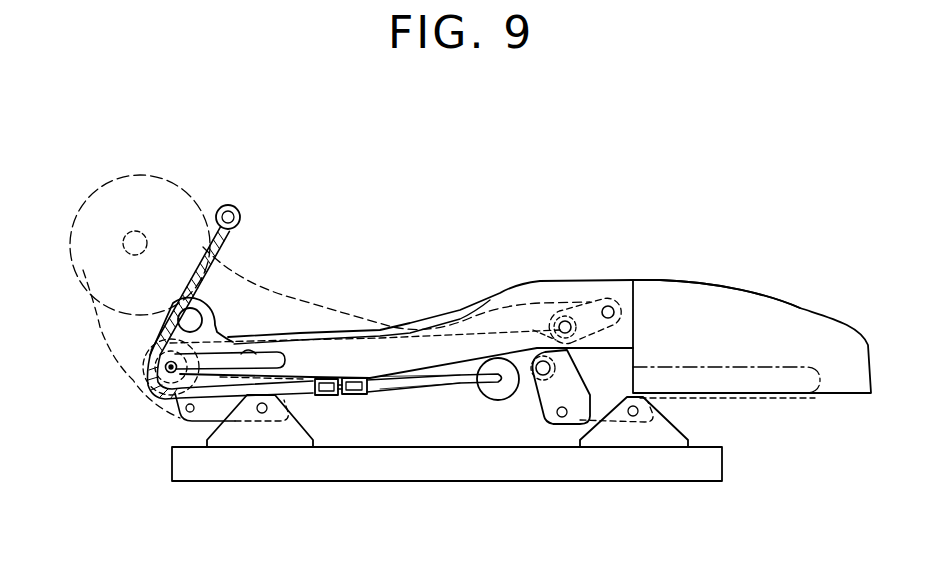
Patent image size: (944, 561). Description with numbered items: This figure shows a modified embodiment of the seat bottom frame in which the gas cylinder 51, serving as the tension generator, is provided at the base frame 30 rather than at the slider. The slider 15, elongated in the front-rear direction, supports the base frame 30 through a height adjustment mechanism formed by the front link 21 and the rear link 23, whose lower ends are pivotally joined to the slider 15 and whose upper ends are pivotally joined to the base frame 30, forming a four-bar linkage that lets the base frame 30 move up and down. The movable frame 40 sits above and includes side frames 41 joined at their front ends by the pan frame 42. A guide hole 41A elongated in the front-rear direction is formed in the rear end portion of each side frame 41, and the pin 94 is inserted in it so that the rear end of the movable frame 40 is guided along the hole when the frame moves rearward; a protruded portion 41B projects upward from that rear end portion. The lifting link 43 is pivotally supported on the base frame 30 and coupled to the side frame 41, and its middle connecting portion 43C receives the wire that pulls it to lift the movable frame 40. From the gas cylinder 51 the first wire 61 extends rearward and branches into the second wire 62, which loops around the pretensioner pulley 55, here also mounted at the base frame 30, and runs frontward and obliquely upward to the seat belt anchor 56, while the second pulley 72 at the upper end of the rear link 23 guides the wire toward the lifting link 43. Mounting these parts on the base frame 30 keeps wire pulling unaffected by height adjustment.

The slider 15 is at (620, 470).
The front link 21 is at (567, 425).
The rear link 23 is at (190, 418).
The base frame 30 is at (202, 208).
The movable frame 40 is at (800, 310).
The side frame 41 is at (503, 293).
The guide hole 41A is at (248, 332).
The protruded portion 41B is at (173, 330).
The pan frame 42 is at (757, 300).
The lifting link 43 is at (595, 297).
The connecting portion 43C is at (565, 321).
The gas cylinder 51 is at (498, 400).
The pretensioner pulley 55 is at (148, 366).
The second pulley 72 is at (171, 367).
The seat belt anchor 56 is at (235, 207).
The first wire 61 is at (425, 383).
The second wire 62 is at (185, 279).
The pin 94 is at (165, 372).